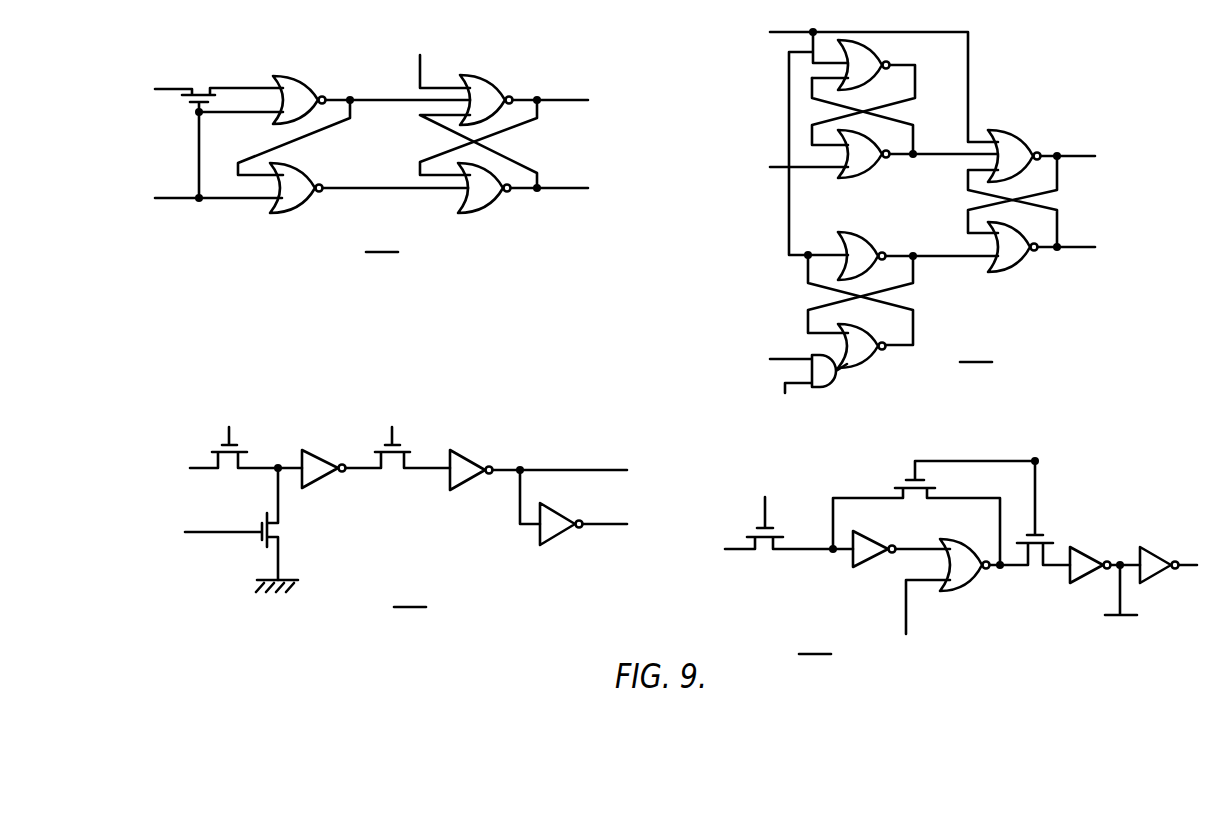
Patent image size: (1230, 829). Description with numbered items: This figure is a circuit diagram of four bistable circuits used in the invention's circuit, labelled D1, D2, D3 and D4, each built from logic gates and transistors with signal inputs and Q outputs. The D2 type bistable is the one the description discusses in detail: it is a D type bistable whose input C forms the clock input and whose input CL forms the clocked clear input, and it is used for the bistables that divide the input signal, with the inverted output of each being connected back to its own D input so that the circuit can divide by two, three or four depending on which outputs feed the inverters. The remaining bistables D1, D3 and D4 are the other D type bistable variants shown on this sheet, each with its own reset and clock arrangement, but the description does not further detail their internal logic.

The first D-type flip-flop circuit (NOR latch with pass transistor) D1 is at (372, 144).
The D2 type bistable D2 is at (932, 220).
The third D-type flip-flop circuit (dynamic inverter stages with reset transistor) D3 is at (408, 506).
The fourth D-type flip-flop circuit (dynamic latch with NOR gate and reset) D4 is at (961, 541).